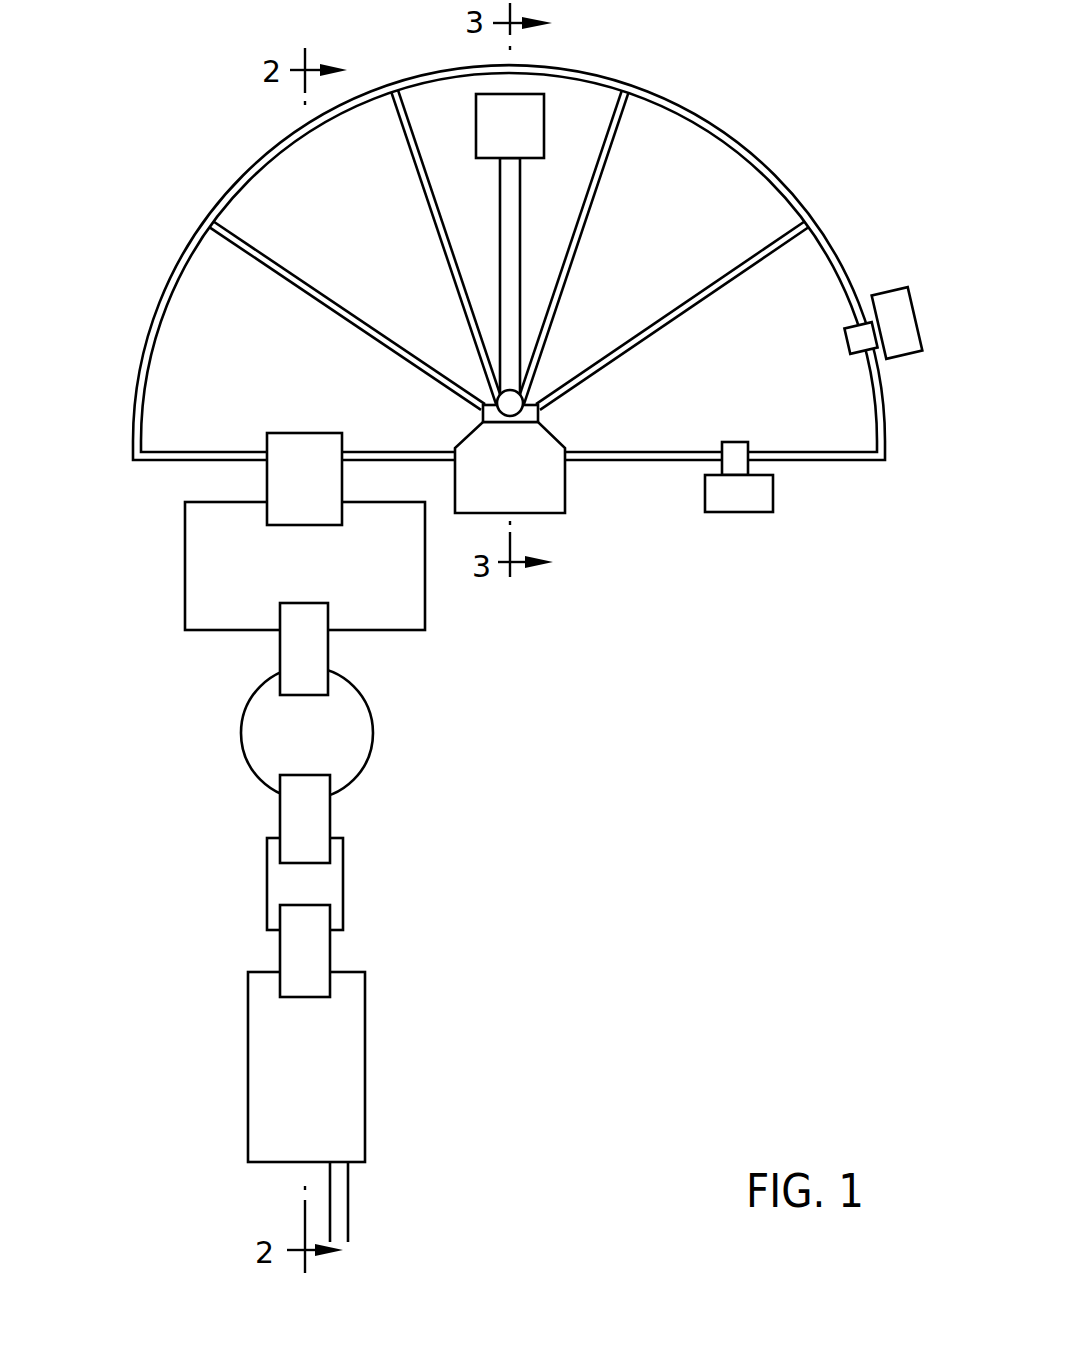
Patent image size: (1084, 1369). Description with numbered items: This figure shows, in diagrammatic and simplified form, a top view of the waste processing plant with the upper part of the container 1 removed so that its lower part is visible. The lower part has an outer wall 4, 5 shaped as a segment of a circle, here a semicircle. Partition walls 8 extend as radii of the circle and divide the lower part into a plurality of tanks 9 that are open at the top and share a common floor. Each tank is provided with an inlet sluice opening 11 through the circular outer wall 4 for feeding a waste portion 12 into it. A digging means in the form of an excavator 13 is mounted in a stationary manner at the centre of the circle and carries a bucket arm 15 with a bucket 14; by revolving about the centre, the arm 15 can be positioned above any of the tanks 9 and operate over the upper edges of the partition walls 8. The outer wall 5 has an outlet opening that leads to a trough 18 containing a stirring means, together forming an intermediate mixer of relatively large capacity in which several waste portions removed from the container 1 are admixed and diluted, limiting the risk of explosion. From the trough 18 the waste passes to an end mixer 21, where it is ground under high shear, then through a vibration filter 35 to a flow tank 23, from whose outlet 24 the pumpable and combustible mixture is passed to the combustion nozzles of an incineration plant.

The container 1 is at (160, 242).
The outer wall 4 is at (693, 108).
The outer wall 5 is at (798, 465).
The partition walls 8 is at (708, 295).
The tanks 9 is at (718, 205).
The inlet sluice opening 11 is at (855, 337).
The waste portion 12 is at (900, 313).
The excavator 13 is at (555, 493).
The bucket 14 is at (532, 115).
The bucket arm 15 is at (520, 188).
The trough 18 is at (417, 607).
The end mixer 21 is at (363, 733).
The flow tank 23 is at (345, 1045).
The outlet 24 is at (345, 1212).
The vibration filter 35 is at (325, 883).